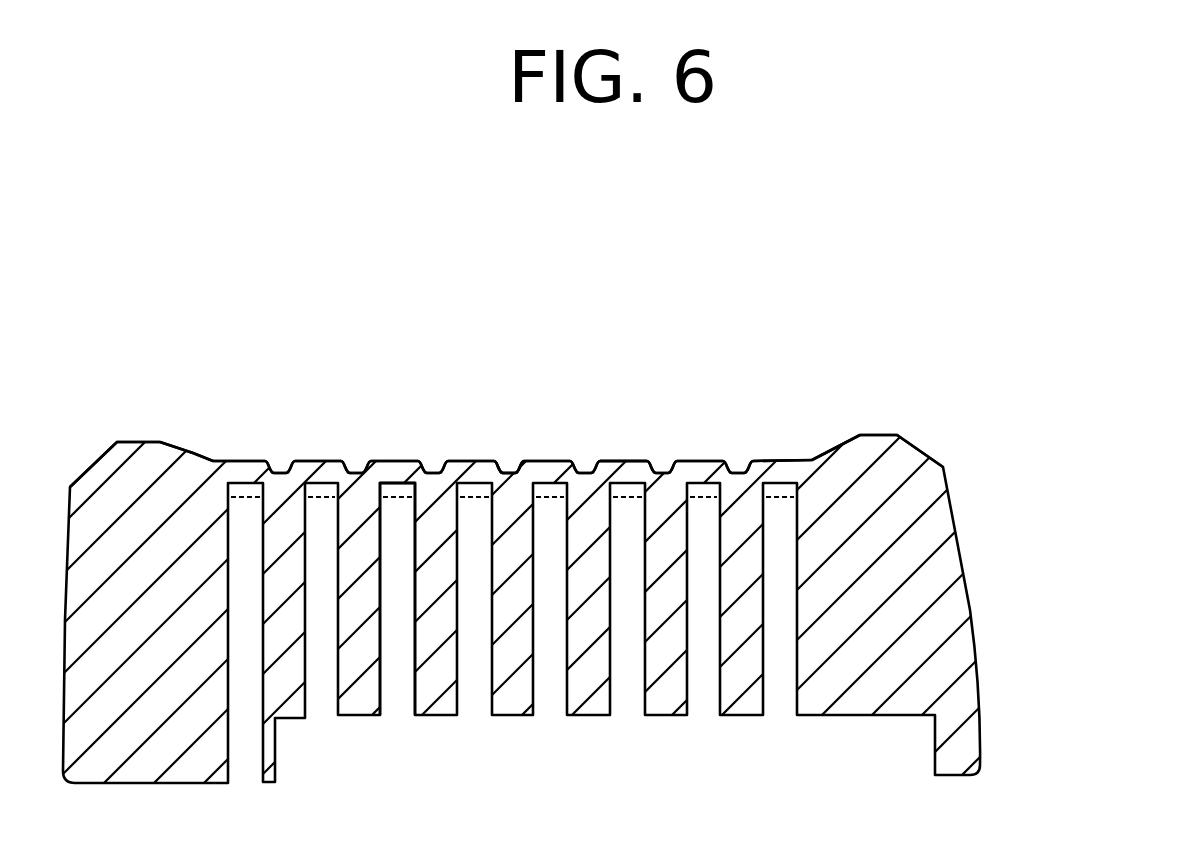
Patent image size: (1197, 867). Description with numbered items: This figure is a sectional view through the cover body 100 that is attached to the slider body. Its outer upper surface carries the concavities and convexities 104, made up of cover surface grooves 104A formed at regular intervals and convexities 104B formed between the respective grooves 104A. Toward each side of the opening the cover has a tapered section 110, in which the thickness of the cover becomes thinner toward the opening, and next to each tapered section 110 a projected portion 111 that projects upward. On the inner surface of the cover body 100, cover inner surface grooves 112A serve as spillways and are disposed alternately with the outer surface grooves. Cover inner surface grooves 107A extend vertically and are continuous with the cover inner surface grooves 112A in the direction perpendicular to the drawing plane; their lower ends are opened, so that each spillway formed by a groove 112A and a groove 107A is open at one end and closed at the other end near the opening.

The cover body 100 is at (1040, 489).
The concavities and convexities 104 is at (653, 357).
The cover surface grooves 104A is at (510, 465).
The convexities 104B is at (623, 463).
The cover inner surface grooves 107A is at (402, 697).
The tapered section 110 is at (193, 451).
The projected portion 111 is at (150, 440).
The cover inner surface grooves 112A is at (388, 483).